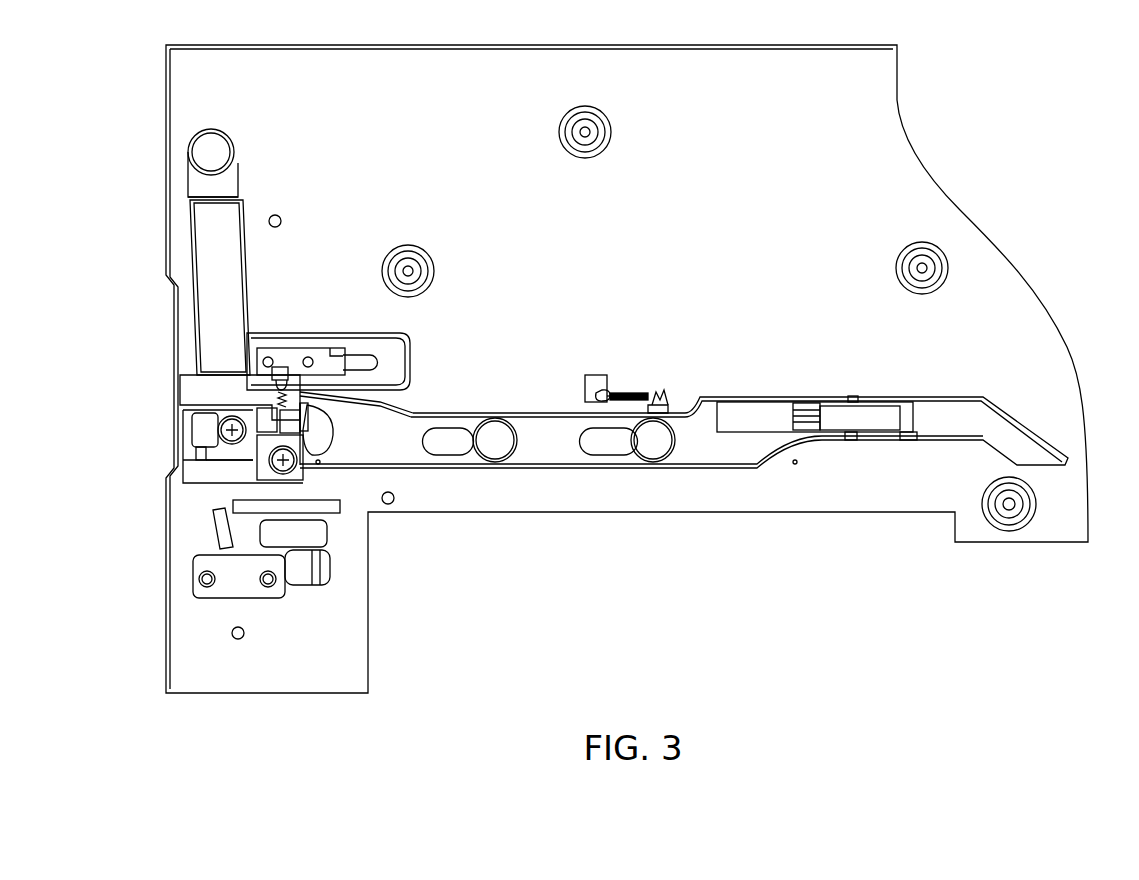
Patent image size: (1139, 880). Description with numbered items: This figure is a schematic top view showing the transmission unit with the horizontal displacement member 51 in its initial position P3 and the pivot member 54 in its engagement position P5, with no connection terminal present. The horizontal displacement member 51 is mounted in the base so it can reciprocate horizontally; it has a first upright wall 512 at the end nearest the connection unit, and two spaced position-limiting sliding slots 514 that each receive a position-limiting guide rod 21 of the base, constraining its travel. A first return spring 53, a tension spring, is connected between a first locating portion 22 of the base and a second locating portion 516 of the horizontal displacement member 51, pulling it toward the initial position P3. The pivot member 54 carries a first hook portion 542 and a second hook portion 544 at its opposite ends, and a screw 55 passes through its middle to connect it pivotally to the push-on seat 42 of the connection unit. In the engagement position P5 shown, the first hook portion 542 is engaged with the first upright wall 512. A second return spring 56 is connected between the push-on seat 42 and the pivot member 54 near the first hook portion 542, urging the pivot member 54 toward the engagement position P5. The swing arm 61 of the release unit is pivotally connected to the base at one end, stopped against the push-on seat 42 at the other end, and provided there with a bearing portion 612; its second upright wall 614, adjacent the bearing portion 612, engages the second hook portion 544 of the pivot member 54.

The swing arm 61 is at (203, 222).
The second return spring 56 is at (278, 372).
The push-on seat 42 is at (212, 368).
The pivot member 54 is at (199, 392).
The second hook portion 544 is at (193, 420).
The second upright wall 614 is at (196, 452).
The screw 55 is at (223, 437).
The bearing portion 612 is at (210, 528).
The first hook portion 542 is at (312, 422).
The first upright wall 512 is at (345, 428).
The engagement position P5 is at (322, 470).
The first locating portion 22 is at (593, 386).
The position-limiting sliding slots 514 is at (598, 452).
The first return spring 53 is at (625, 402).
The position-limiting guide rod 21 is at (652, 447).
The second locating portion 516 is at (672, 418).
The horizontal displacement member 51 is at (725, 453).
The initial position P3 is at (797, 475).